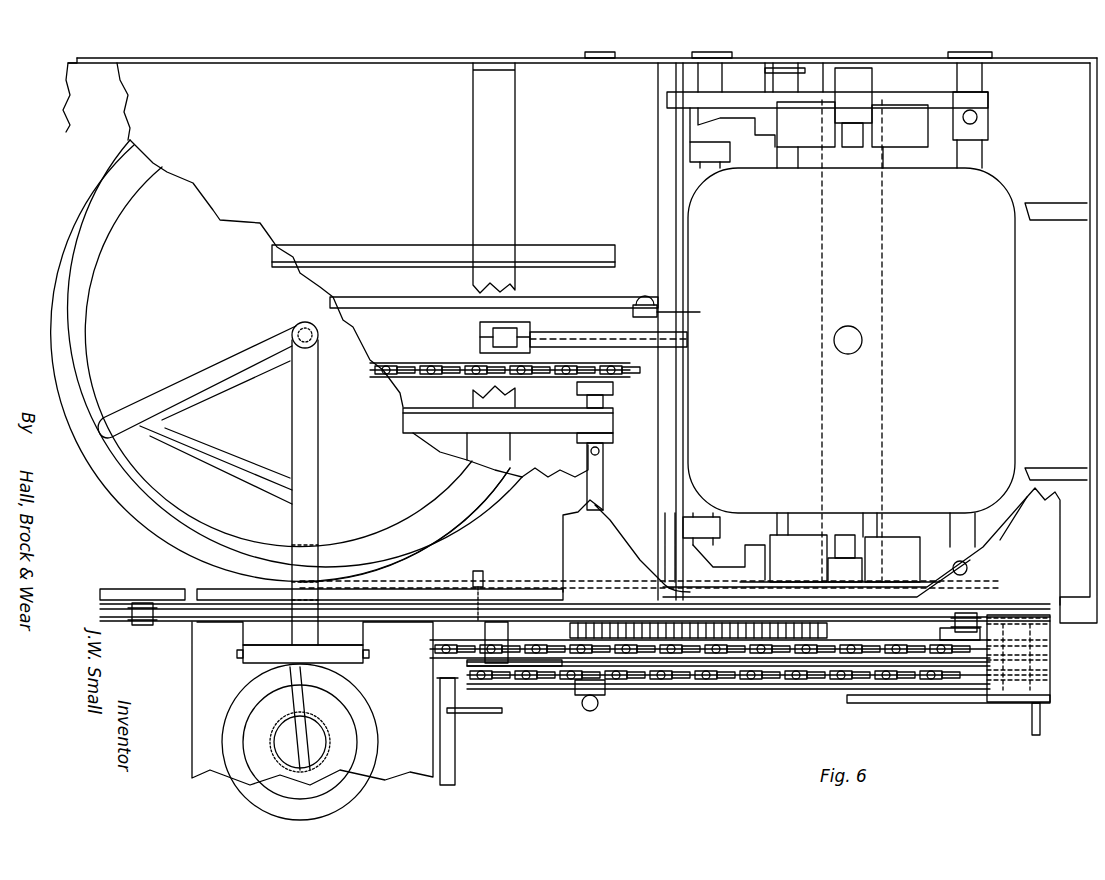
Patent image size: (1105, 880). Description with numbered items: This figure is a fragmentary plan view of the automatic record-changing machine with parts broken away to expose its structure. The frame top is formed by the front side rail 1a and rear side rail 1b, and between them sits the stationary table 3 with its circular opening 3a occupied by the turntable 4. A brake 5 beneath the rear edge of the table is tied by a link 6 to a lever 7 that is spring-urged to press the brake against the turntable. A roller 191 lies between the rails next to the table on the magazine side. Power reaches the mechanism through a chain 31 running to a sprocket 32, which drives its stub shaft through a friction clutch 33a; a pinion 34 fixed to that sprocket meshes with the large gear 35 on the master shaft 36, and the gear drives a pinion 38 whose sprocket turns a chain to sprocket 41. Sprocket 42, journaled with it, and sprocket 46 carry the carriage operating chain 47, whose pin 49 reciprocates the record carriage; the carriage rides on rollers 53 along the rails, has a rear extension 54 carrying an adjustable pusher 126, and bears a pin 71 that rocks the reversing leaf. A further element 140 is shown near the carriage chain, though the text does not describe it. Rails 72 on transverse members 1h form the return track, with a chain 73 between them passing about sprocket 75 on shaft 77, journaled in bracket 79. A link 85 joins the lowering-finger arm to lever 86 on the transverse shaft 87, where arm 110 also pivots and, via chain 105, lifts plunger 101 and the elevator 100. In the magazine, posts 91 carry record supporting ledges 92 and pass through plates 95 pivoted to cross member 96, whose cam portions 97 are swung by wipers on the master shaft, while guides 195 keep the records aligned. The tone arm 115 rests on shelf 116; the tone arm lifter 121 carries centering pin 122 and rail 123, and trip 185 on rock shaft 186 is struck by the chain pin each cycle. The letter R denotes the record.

The front side rail 1a is at (447, 60).
The rear side rail 1b is at (570, 610).
The transverse members 1h is at (516, 283).
The stationary table 3 is at (117, 112).
The circular opening 3a is at (505, 492).
The turntable 4 is at (478, 510).
The brake 5 is at (392, 580).
The link 6 is at (540, 580).
The lever 7 is at (742, 585).
The chain 31 is at (527, 684).
The sprocket 32 is at (660, 686).
The friction clutch 33a is at (605, 705).
The pinion 34 is at (605, 622).
The gear 35 is at (783, 662).
The master shaft 36 is at (720, 178).
The pinion 38 is at (718, 688).
The sprocket 41 is at (1050, 650).
The sprocket 42 is at (1050, 678).
The sprocket 46 is at (495, 690).
The carriage operating chain 47 is at (838, 688).
The pin 49 is at (1040, 720).
The rollers 53 is at (143, 626).
The rear extension 54 is at (1050, 697).
The pin 71 is at (490, 571).
The rails 72 is at (555, 245).
The chain 73 is at (425, 360).
The sprocket 75 is at (622, 370).
The shaft 77 is at (613, 398).
The bracket 79 is at (613, 438).
The link 85 is at (418, 297).
The lever 86 is at (700, 313).
The transverse shaft 87 is at (684, 437).
The posts 91 is at (850, 160).
The record supporting ledges 92 is at (805, 147).
The plates 95 is at (948, 140).
The cross member 96 is at (975, 158).
The cam portions 97 is at (705, 122).
The elevator 100 is at (851, 340).
The plunger 101 is at (862, 345).
The chain 105 is at (580, 332).
The arm 110 is at (480, 332).
The tone arm 115 is at (330, 728).
The shelf 116 is at (205, 687).
The tone arm lifter 121 is at (318, 495).
The centering pin 122 is at (296, 326).
The rail 123 is at (222, 380).
The pusher 126 is at (985, 703).
The block 140 is at (940, 628).
The trip 185 is at (490, 713).
The rock shaft 186 is at (455, 765).
The roller 191 is at (603, 460).
The guides 195 is at (1060, 220).
The reel R is at (303, 343).